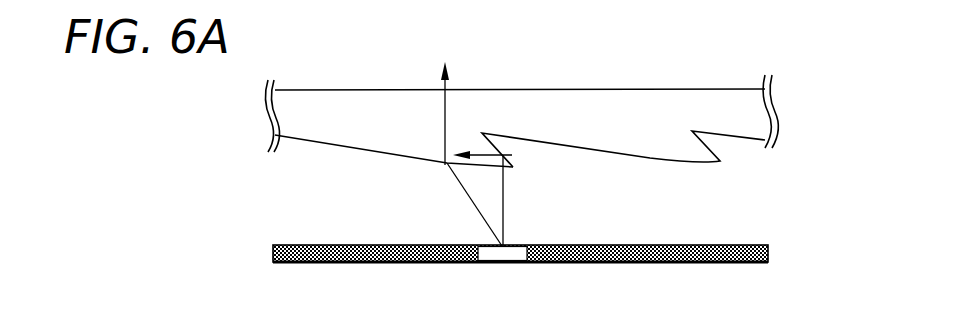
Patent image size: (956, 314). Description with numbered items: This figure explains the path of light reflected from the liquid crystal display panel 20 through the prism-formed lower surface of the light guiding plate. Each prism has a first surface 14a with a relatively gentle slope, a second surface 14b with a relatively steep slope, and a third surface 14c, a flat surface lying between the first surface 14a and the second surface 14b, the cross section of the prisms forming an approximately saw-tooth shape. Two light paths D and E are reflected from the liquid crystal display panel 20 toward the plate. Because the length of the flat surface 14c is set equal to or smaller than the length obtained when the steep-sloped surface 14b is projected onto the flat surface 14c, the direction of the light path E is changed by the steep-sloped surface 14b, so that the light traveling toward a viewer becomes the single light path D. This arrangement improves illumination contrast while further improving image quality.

The first surface 14a is at (338, 145).
The second surface 14b is at (507, 157).
The third surface 14c is at (507, 172).
The liquid crystal display panel 20 is at (768, 247).
The light path D is at (465, 190).
The light path E is at (505, 213).